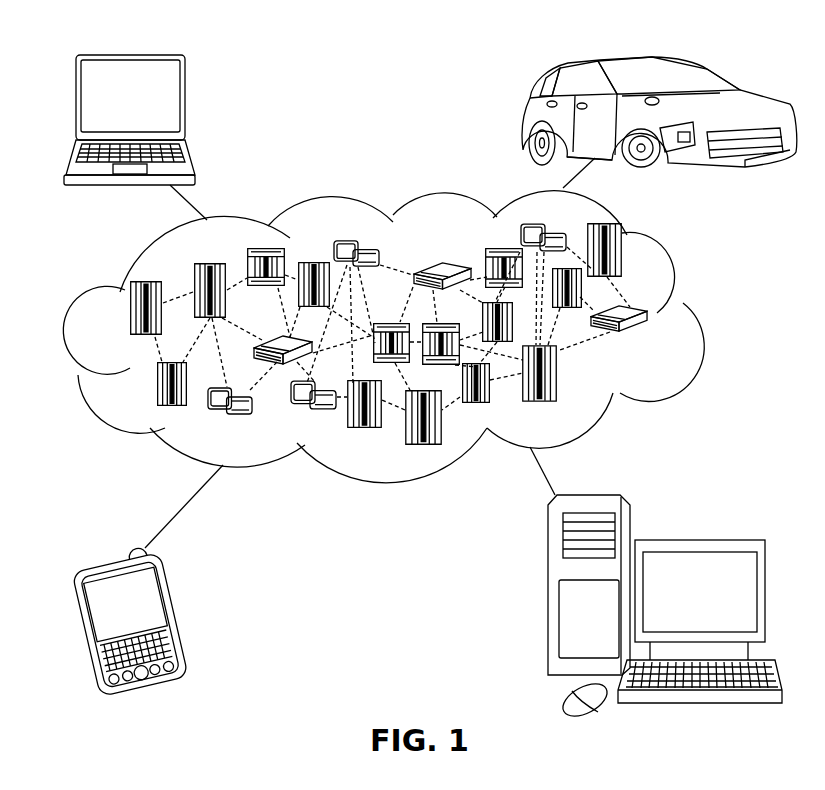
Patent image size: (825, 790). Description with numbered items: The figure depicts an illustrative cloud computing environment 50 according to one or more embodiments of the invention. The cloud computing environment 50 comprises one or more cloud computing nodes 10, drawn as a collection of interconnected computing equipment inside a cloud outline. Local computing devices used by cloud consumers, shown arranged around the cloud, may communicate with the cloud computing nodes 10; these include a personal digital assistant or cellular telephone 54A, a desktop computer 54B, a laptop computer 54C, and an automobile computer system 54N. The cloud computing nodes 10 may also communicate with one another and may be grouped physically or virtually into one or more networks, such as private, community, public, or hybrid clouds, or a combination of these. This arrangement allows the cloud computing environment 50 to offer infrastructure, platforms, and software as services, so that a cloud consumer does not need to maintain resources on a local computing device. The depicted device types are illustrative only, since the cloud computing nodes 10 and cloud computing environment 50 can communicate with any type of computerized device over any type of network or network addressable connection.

The cloud computing nodes 10 is at (427, 334).
The cloud computing environment 50 is at (700, 313).
The personal digital assistant or cellular telephone 54A is at (178, 614).
The desktop computer 54B is at (700, 540).
The laptop computer 54C is at (185, 103).
The automobile computer system 54N is at (527, 116).